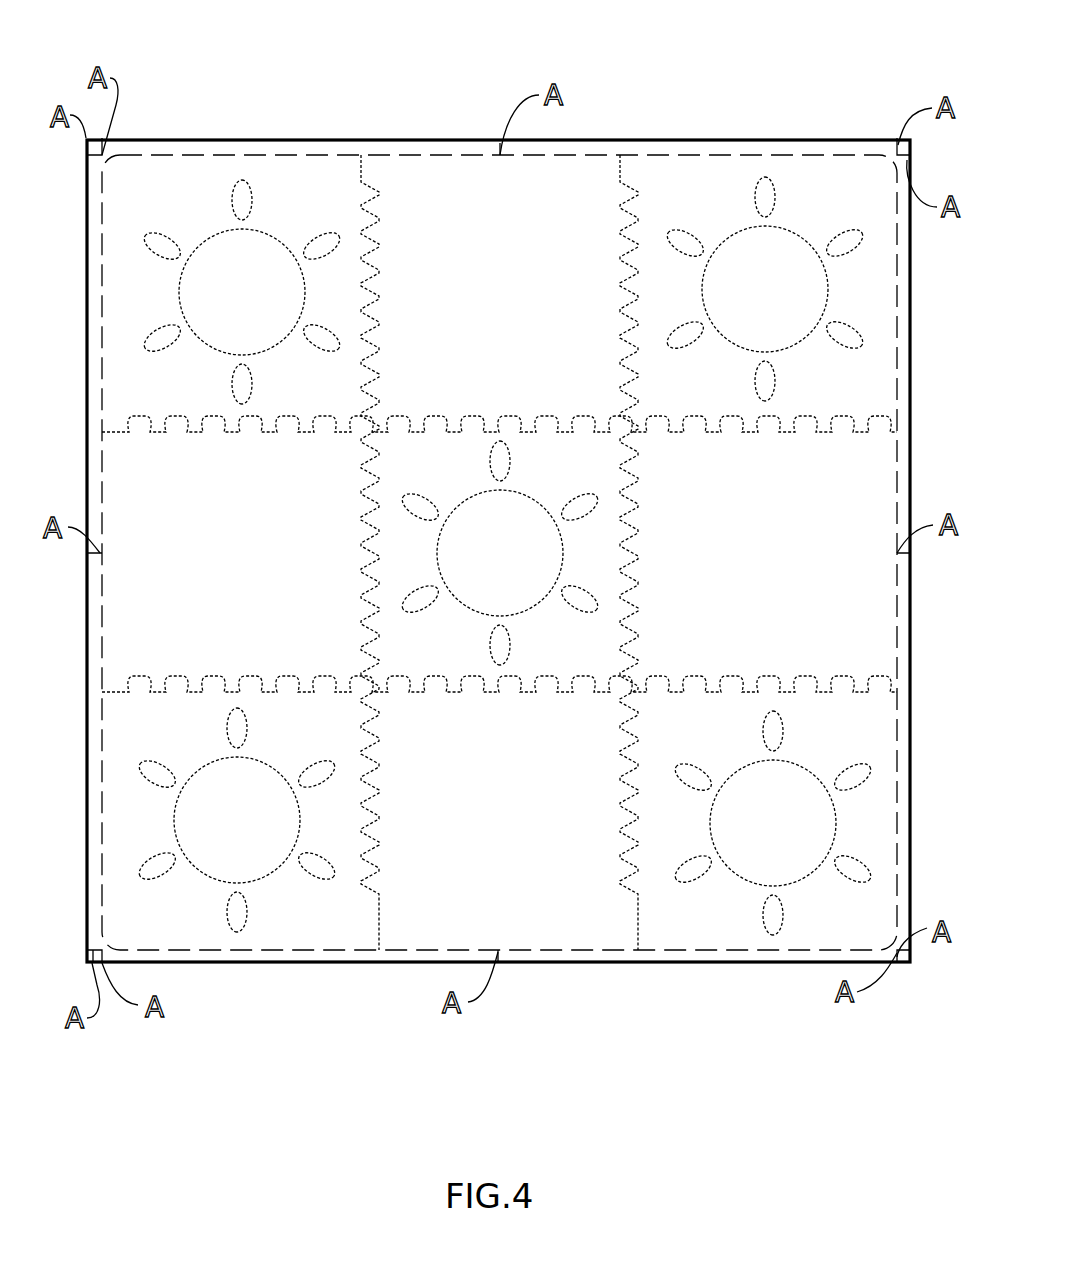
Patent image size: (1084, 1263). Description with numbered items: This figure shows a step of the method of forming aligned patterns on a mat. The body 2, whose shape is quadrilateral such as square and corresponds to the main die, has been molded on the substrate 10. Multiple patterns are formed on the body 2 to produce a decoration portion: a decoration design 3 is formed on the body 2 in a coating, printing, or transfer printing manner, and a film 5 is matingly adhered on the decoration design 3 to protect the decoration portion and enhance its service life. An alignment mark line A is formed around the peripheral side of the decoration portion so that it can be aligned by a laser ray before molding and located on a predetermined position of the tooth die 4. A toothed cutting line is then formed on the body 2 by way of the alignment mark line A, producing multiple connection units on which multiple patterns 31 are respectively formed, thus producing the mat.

The body 2 is at (163, 138).
The tooth die 4 is at (380, 260).
The substrate 10 is at (513, 484).
The pattern 31 is at (245, 270).
The decoration design 3 is at (802, 227).
The film 5 is at (808, 197).